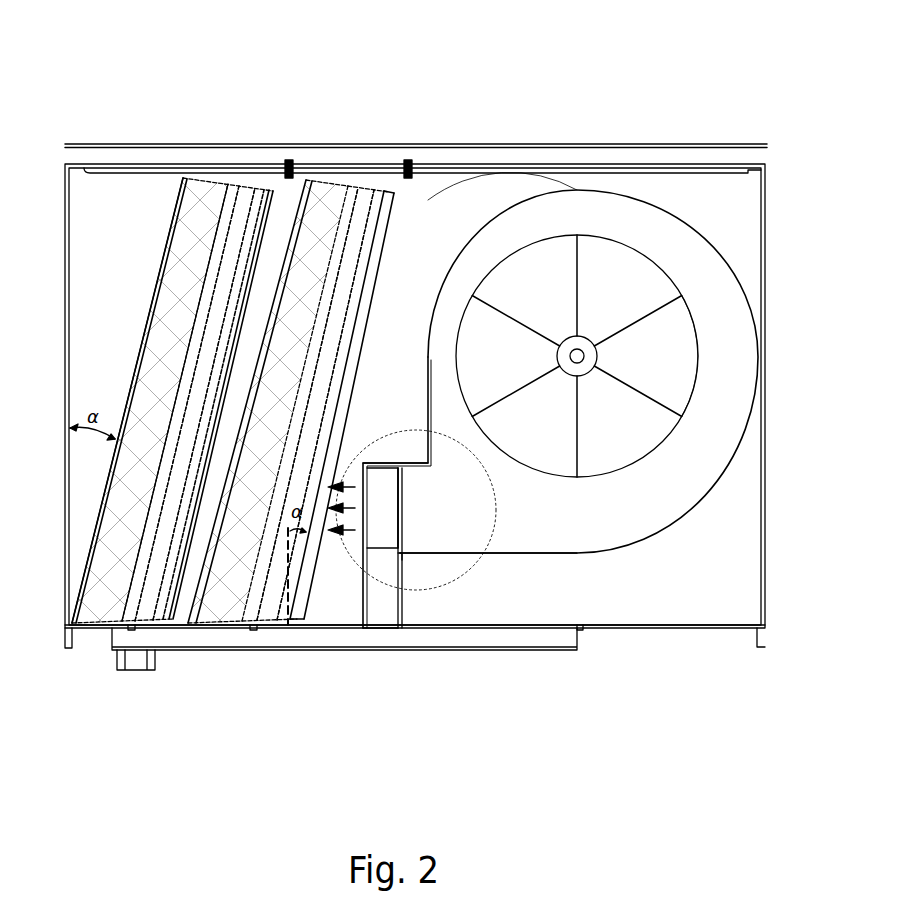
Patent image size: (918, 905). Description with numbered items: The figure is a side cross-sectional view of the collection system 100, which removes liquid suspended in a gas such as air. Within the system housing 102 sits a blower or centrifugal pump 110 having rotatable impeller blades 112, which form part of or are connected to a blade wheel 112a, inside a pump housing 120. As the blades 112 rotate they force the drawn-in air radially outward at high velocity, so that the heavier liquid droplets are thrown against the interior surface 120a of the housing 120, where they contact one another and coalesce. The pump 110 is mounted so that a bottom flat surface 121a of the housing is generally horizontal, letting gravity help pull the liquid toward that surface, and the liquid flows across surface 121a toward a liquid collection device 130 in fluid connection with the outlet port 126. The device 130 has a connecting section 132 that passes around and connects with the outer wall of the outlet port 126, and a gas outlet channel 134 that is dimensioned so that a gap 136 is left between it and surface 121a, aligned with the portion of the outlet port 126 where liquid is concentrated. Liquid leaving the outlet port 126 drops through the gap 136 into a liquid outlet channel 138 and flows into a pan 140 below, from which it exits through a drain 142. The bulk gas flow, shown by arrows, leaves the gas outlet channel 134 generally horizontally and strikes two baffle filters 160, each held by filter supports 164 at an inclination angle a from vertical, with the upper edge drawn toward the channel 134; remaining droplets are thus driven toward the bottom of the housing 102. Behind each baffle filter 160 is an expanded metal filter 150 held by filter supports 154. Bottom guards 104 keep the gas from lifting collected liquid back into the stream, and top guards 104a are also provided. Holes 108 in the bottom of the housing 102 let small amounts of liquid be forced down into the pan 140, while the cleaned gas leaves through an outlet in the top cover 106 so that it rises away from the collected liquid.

The collection system 100 is at (300, 92).
The system housing 102 is at (64, 192).
The bottom guard 104 is at (175, 612).
The top guard 104a is at (275, 192).
The top cover 106 is at (582, 143).
The holes 108 is at (132, 632).
The centrifugal pump 110 is at (497, 210).
The impeller blade 112 is at (648, 393).
The blade wheel 112a is at (663, 440).
The pump housing 120 is at (678, 210).
The interior surface 120a is at (543, 210).
The bottom flat surface 121a is at (510, 540).
The outlet port 126 is at (413, 495).
The liquid collection device 130 is at (382, 452).
The connecting section 132 is at (412, 460).
The gas outlet channel 134 is at (373, 530).
The gap 136 is at (397, 553).
The liquid outlet channel 138 is at (382, 570).
The pan 140 is at (352, 650).
The drain 142 is at (158, 667).
The expanded metal filter 150 is at (163, 257).
The filter support 154 is at (123, 380).
The baffle filter 160 is at (287, 305).
The filter support 164 is at (380, 260).